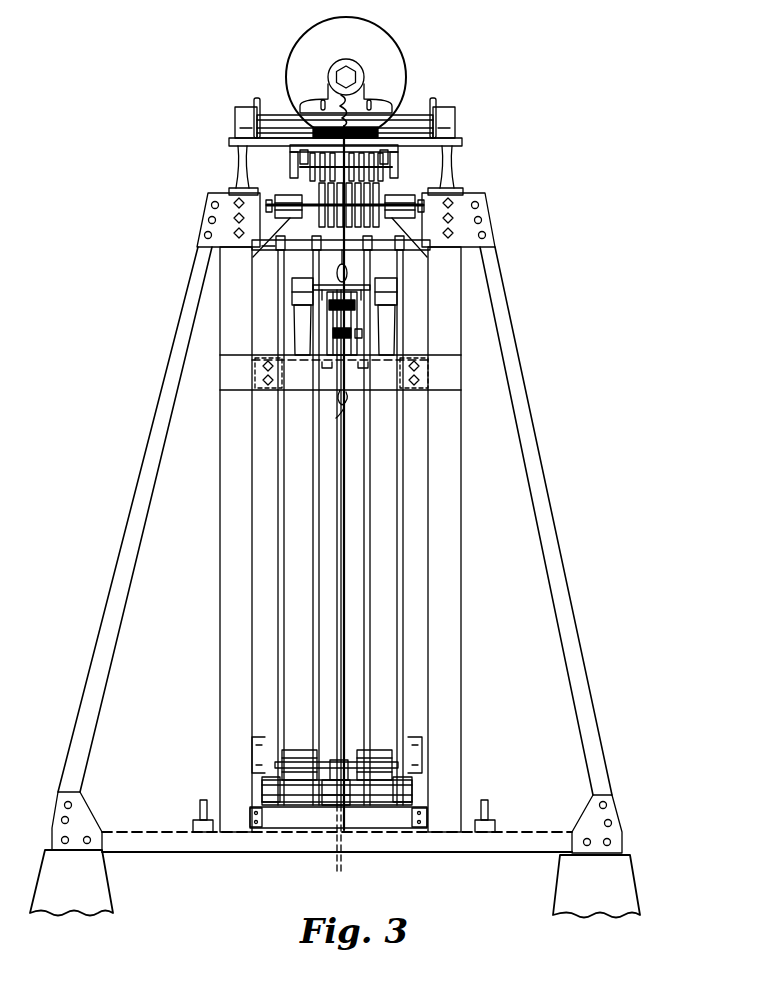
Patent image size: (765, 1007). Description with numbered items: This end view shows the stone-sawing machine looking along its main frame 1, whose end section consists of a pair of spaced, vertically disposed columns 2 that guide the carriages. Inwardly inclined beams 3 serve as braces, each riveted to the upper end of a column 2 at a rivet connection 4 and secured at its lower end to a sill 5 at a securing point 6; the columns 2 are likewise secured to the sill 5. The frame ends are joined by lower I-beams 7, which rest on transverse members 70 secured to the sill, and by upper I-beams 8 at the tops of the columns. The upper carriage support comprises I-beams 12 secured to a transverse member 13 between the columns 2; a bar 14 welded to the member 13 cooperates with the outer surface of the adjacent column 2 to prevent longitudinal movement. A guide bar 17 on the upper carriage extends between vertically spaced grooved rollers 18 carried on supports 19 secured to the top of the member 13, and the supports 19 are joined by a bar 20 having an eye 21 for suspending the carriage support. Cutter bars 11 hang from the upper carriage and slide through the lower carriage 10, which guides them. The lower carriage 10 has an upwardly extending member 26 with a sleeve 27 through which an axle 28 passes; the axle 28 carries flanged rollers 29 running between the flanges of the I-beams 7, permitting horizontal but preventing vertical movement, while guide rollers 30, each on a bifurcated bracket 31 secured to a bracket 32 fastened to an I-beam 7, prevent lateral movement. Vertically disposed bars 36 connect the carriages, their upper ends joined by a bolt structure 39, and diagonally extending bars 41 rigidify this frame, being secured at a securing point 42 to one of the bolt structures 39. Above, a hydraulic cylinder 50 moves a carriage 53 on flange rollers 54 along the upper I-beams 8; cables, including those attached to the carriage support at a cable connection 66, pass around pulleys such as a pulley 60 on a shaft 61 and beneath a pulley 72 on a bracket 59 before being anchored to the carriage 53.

The main frame 1 is at (487, 252).
The columns 2 is at (445, 418).
The inwardly inclined beams 3 is at (493, 297).
The rivet connection 4 is at (478, 218).
The sill 5 is at (293, 842).
The securing point 6 is at (612, 823).
The lower I-beams 7 is at (413, 787).
The upper I-beams 8 is at (453, 167).
The lower carriage 10 is at (330, 762).
The cutter bars 11 is at (341, 537).
The I-beams 12 is at (387, 317).
The transverse member 13 is at (302, 382).
The bar 14 is at (240, 373).
The guide bar 17 is at (342, 318).
The grooved rollers 18 is at (333, 332).
The supports 19 is at (362, 334).
The bar 20 is at (332, 282).
The eye 21 is at (348, 282).
The member 26 is at (340, 762).
The sleeve 27 is at (348, 803).
The axle 28 is at (310, 788).
The flanged rollers 29 is at (270, 788).
The guide rollers 30 is at (303, 760).
The bifurcated bracket 31 is at (377, 755).
The bracket 32 is at (258, 737).
The vertically disposed bars 36 is at (366, 498).
The bolt structure 39 is at (397, 250).
The diagonally extending bars 41 is at (397, 477).
The securing point 42 is at (288, 247).
The hydraulic cylinder 50 is at (388, 68).
The carriage 53 is at (383, 103).
The flange rollers 54 is at (438, 113).
The bracket 59 is at (390, 165).
The pulley 60 is at (375, 192).
The shaft 61 is at (312, 200).
The cable connection 66 is at (365, 390).
The transverse members 70 is at (402, 820).
The pulley 72 is at (317, 163).